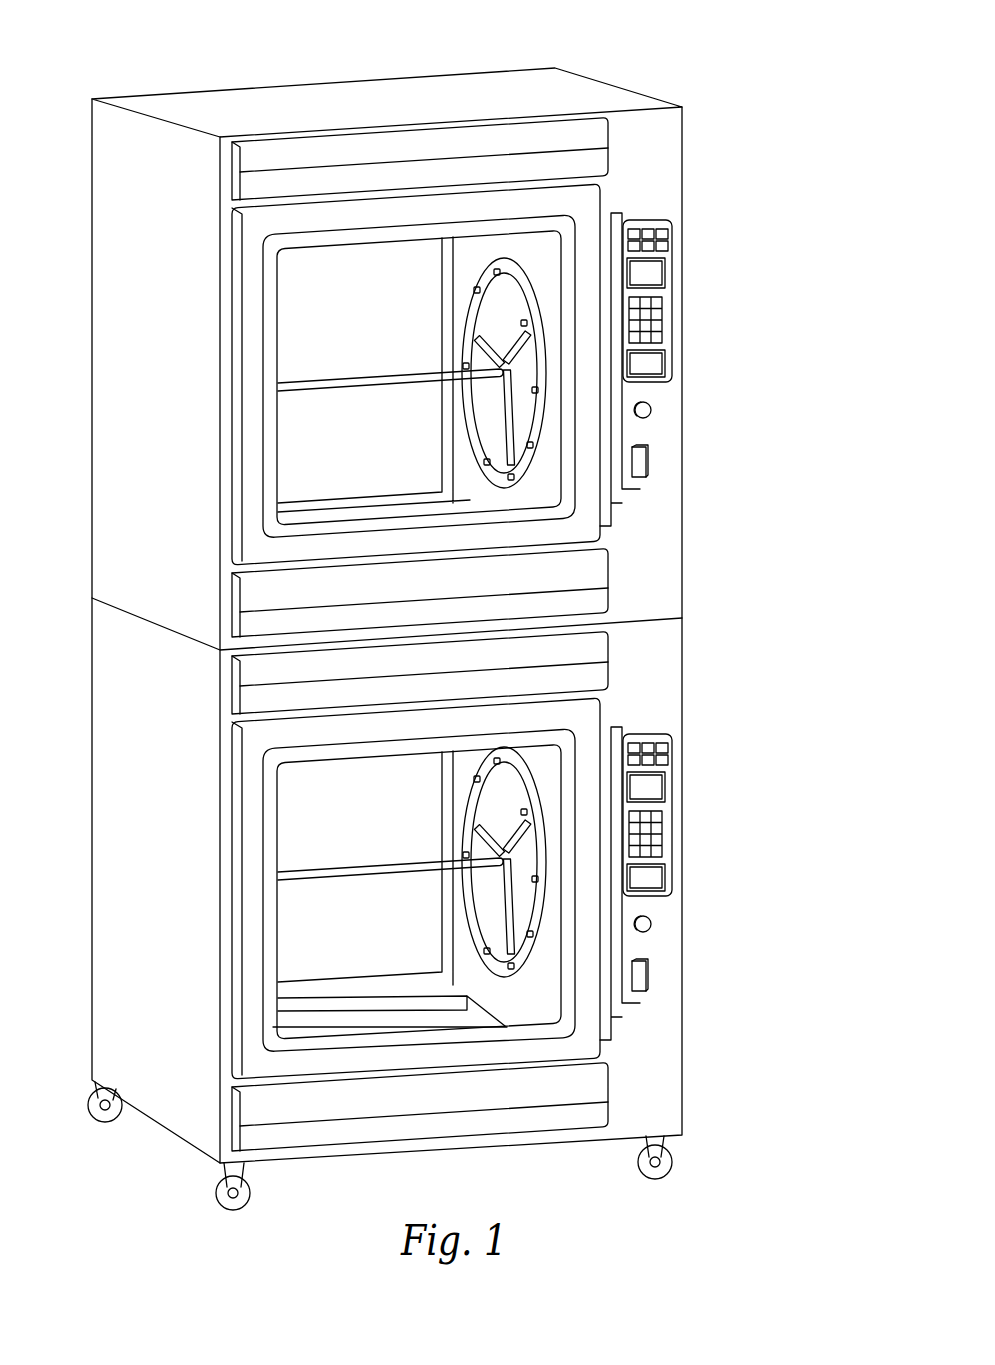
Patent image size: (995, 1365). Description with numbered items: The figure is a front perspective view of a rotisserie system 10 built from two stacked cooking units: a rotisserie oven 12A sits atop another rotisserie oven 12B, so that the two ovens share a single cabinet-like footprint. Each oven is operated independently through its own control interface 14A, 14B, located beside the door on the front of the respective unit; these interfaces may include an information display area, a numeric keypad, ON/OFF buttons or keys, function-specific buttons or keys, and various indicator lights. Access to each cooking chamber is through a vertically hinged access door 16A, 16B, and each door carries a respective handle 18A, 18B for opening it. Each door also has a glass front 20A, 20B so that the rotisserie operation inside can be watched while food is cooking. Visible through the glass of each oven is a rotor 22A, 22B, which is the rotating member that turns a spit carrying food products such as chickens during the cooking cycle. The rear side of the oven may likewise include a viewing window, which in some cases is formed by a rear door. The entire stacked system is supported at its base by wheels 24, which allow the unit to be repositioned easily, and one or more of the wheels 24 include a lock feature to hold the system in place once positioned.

The rotisserie system 10 is at (678, 68).
The rotisserie oven 12A is at (682, 143).
The rotisserie oven 12B is at (405, 879).
The control interface 14A is at (676, 220).
The control interface 14B is at (695, 866).
The vertically hinged access door 16A is at (248, 237).
The vertically hinged access door 16B is at (321, 888).
The handle 18A is at (640, 489).
The handle 18B is at (682, 886).
The glass front 20A is at (292, 352).
The glass front 20B is at (310, 890).
The rotor 22A is at (468, 320).
The rotor 22B is at (412, 862).
The wheels 24 is at (200, 1185).